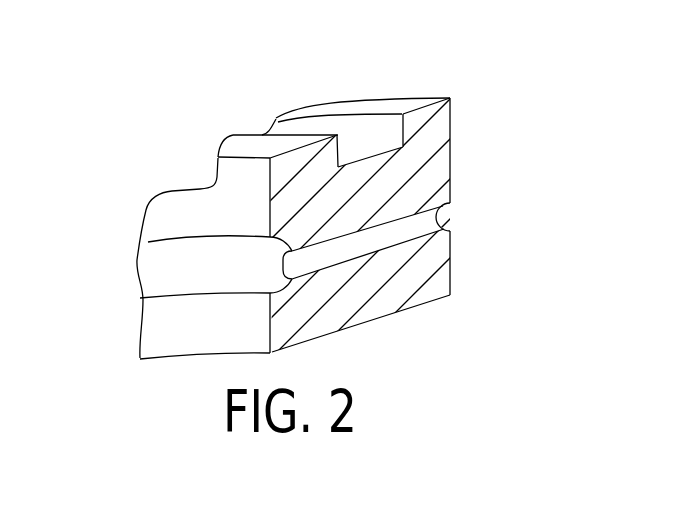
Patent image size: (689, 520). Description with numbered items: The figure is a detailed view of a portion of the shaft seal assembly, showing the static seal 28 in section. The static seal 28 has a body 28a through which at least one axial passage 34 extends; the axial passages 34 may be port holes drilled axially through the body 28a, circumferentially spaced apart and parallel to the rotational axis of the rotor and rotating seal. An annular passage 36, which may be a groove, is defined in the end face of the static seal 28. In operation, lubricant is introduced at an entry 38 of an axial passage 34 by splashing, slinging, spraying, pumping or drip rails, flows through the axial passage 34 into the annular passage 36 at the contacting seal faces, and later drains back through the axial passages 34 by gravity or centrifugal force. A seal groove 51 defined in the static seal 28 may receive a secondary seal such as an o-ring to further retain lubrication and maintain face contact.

The static seal 28 is at (133, 128).
The body of the static seal 28a is at (442, 130).
The seal groove 51 is at (384, 128).
The axial passage 34 is at (397, 231).
The entry 38 is at (455, 211).
The annular passage 36 is at (165, 264).